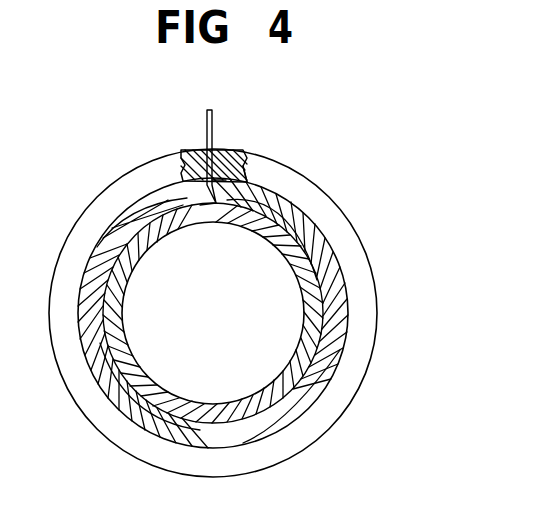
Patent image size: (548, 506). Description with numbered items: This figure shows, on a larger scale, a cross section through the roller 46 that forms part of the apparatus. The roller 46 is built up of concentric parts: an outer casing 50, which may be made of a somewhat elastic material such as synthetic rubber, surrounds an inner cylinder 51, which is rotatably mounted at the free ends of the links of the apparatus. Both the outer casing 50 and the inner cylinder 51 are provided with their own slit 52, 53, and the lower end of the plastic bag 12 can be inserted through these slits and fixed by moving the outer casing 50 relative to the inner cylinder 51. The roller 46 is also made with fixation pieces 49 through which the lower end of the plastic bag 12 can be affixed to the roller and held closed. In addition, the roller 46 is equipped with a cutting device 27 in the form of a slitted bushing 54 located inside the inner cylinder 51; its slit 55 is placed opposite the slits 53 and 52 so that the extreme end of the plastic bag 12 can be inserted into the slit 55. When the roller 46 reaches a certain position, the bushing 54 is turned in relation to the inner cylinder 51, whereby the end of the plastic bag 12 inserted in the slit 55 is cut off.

The plastic bag 12 is at (212, 110).
The cutting device 27 is at (188, 192).
The roller 46 is at (323, 187).
The fixation pieces 49 is at (216, 178).
The outer casing 50 is at (355, 282).
The inner cylinder 51 is at (310, 240).
The slit 52 is at (205, 170).
The slit 53 is at (247, 168).
The slitted bushing 54 is at (262, 402).
The slit 55 is at (208, 207).